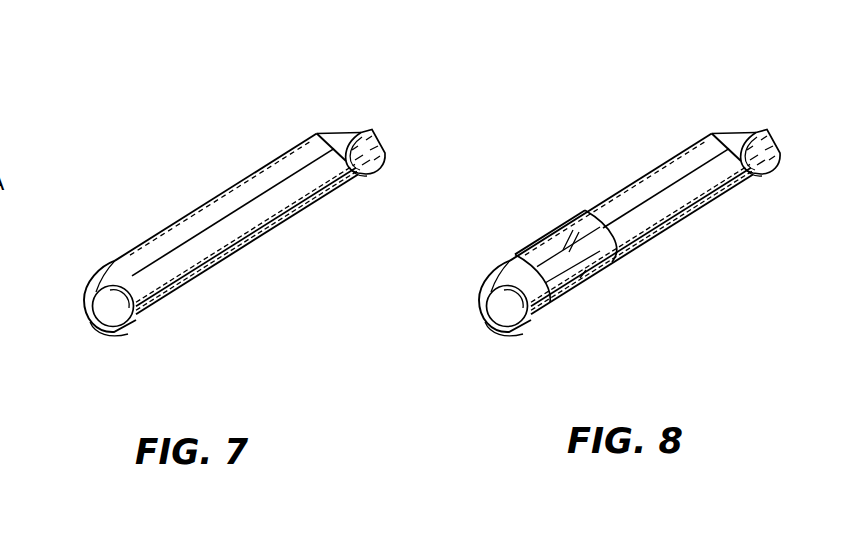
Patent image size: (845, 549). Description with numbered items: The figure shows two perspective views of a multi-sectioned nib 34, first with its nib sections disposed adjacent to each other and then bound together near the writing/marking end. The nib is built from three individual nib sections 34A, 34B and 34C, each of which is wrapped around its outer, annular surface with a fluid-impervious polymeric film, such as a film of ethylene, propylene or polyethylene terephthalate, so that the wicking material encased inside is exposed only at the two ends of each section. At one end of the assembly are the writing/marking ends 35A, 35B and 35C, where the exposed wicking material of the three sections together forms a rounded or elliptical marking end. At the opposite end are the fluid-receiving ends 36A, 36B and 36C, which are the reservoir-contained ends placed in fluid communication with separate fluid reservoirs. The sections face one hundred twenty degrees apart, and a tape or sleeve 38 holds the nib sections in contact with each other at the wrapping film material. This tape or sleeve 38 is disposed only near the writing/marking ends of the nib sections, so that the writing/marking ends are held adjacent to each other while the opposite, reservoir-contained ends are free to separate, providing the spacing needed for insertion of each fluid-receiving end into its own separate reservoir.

In FIG. 8, the multi-sectioned nib 34 is at (643, 122).
In FIG. 7, the nib section 34A is at (260, 207).
In FIG. 8, the nib section 34A is at (698, 192).
In FIG. 7, the nib section 34B is at (185, 214).
In FIG. 8, the nib section 34B is at (658, 170).
In FIG. 7, the nib section 34C is at (186, 293).
In FIG. 8, the nib section 34C is at (642, 255).
In FIG. 7, the writing/marking end 35A is at (105, 308).
In FIG. 8, the writing/marking end 35A is at (498, 309).
In FIG. 7, the writing/marking end 35B is at (91, 290).
In FIG. 8, the writing/marking end 35B is at (484, 290).
In FIG. 7, the writing/marking end 35C is at (103, 332).
In FIG. 8, the writing/marking end 35C is at (496, 328).
In FIG. 7, the fluid-receiving end 36A is at (378, 139).
In FIG. 8, the fluid-receiving end 36A is at (773, 139).
In FIG. 7, the fluid-receiving end 36B is at (333, 131).
In FIG. 8, the fluid-receiving end 36B is at (740, 132).
In FIG. 7, the fluid-receiving end 36C is at (363, 172).
In FIG. 8, the fluid-receiving end 36C is at (758, 172).
In FIG. 8, the tape or sleeve 38 is at (540, 247).